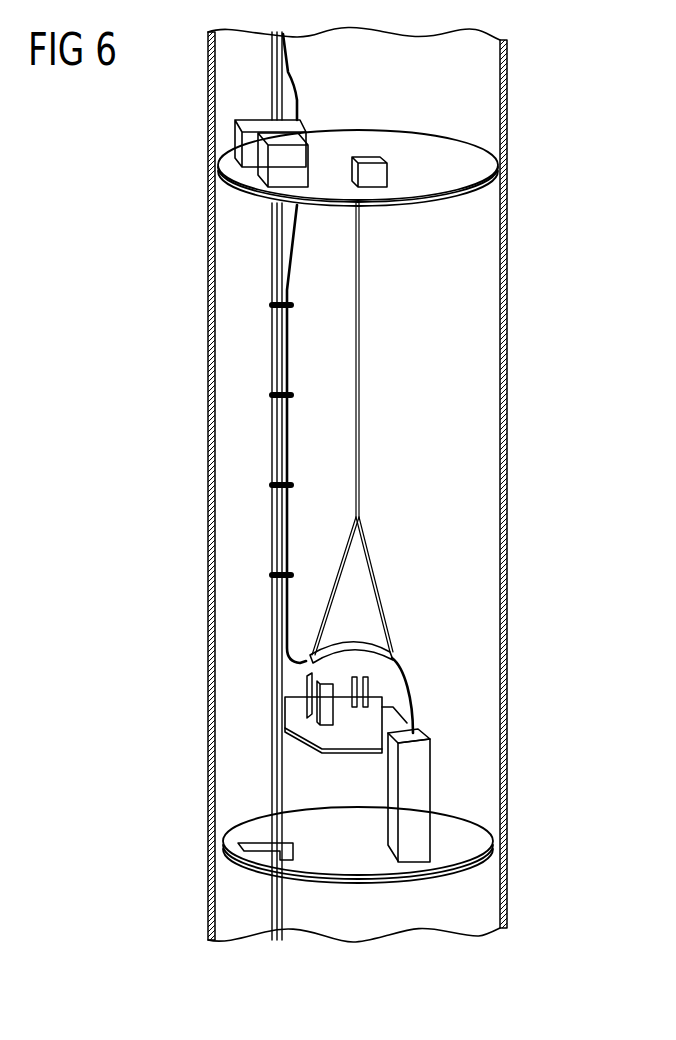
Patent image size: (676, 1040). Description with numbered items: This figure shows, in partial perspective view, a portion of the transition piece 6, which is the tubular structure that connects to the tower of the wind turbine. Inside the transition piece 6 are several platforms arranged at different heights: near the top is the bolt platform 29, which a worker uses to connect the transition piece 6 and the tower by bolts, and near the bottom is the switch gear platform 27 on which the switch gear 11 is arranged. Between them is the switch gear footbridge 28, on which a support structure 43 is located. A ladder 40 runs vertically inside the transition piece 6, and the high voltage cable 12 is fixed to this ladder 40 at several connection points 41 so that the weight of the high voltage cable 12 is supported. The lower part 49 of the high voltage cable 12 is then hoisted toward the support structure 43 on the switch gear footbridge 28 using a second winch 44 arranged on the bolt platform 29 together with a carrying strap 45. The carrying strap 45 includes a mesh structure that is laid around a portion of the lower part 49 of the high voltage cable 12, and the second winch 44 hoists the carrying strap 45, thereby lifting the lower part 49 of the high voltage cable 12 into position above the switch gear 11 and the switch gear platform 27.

The transition piece 6 is at (524, 411).
The switch gear 11 is at (417, 787).
The high voltage cable 12 is at (288, 83).
The switch gear platform 27 is at (478, 845).
The switch gear footbridge 28 is at (297, 718).
The bolt platform 29 is at (478, 158).
The ladder 40 is at (272, 254).
The connection points 41 is at (271, 306).
The support structure 43 is at (290, 687).
The second winch 44 is at (372, 174).
The carrying strap 45 is at (381, 643).
The lower part of the high voltage cable 49 is at (349, 640).